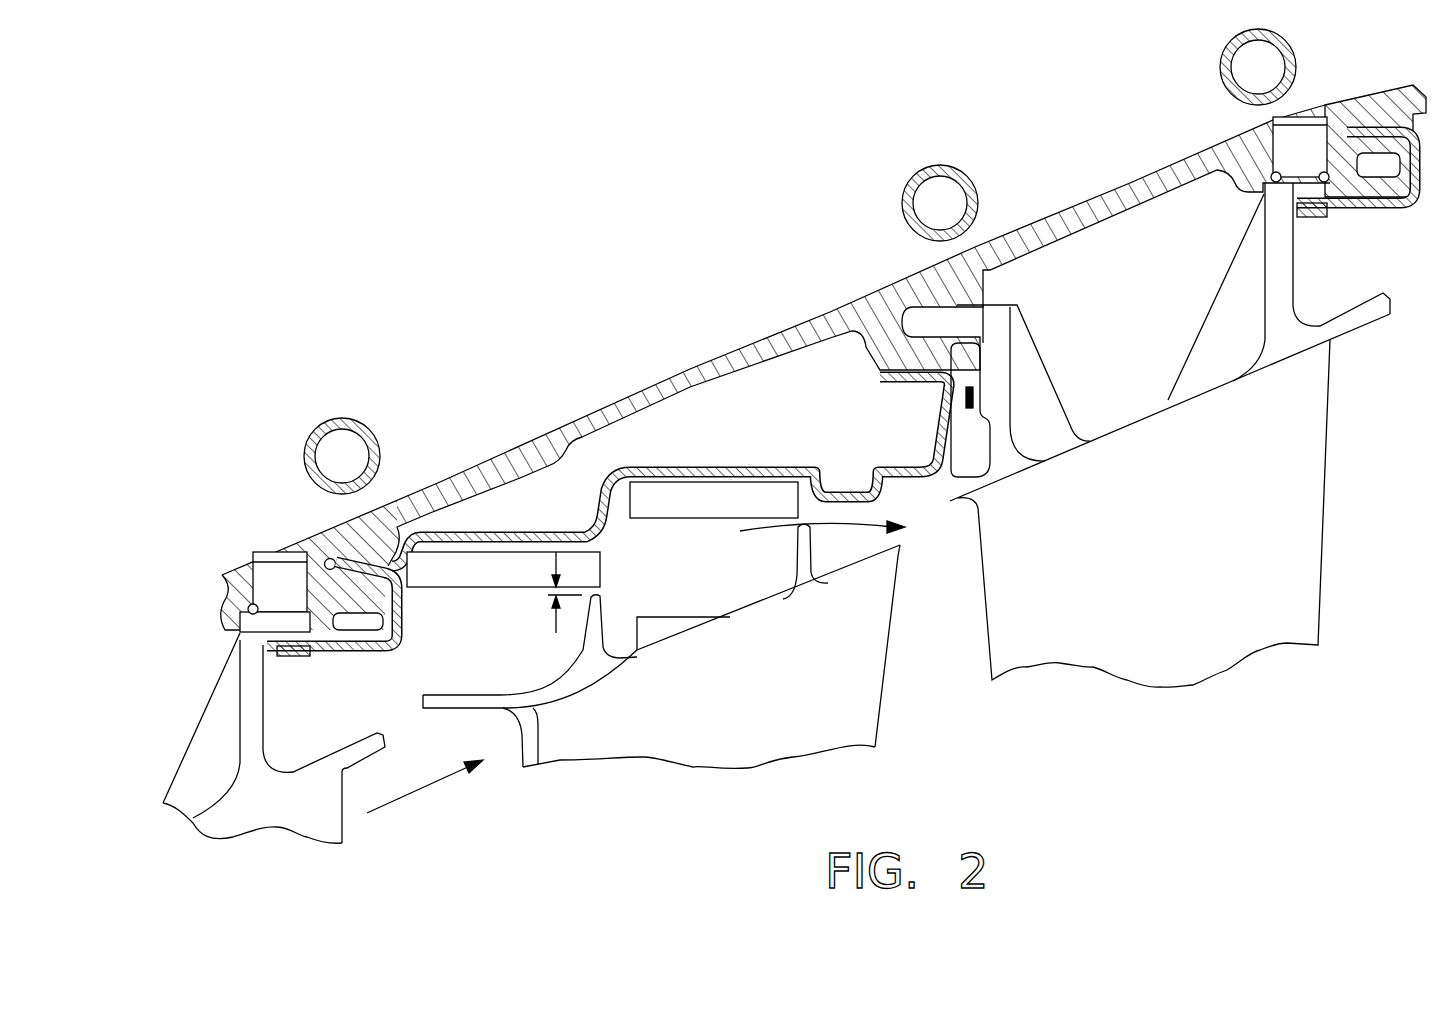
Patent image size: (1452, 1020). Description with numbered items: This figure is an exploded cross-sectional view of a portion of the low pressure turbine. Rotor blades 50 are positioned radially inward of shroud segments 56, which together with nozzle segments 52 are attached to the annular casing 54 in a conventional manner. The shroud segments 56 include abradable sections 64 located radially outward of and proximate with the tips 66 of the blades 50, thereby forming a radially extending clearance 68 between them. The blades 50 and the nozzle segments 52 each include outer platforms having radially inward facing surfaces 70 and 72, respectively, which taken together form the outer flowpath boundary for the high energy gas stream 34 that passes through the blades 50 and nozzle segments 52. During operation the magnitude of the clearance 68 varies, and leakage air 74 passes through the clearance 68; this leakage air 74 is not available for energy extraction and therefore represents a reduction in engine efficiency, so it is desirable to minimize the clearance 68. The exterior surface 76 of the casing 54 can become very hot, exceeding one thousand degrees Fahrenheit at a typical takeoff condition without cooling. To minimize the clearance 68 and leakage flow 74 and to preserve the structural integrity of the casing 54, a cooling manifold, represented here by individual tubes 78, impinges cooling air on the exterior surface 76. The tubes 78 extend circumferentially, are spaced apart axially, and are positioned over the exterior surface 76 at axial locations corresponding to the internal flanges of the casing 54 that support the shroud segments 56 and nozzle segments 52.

The high energy gas stream 34 is at (411, 797).
The rotor blades 50 is at (534, 712).
The nozzle segments 52 is at (1007, 478).
The annular casing 54 is at (1181, 158).
The shroud segments 56 is at (622, 462).
The abradable sections 64 is at (463, 590).
The tips 66 is at (793, 550).
The radially extending clearance 68 is at (552, 628).
The radially inward facing surface 70 is at (902, 548).
The radially inward facing surface 72 is at (1282, 363).
The leakage air 74 is at (760, 533).
The exterior surface 76 is at (1057, 212).
The individual tubes 78 is at (338, 418).